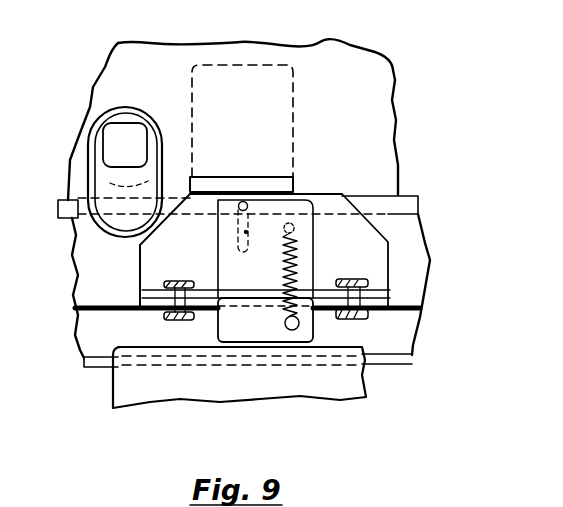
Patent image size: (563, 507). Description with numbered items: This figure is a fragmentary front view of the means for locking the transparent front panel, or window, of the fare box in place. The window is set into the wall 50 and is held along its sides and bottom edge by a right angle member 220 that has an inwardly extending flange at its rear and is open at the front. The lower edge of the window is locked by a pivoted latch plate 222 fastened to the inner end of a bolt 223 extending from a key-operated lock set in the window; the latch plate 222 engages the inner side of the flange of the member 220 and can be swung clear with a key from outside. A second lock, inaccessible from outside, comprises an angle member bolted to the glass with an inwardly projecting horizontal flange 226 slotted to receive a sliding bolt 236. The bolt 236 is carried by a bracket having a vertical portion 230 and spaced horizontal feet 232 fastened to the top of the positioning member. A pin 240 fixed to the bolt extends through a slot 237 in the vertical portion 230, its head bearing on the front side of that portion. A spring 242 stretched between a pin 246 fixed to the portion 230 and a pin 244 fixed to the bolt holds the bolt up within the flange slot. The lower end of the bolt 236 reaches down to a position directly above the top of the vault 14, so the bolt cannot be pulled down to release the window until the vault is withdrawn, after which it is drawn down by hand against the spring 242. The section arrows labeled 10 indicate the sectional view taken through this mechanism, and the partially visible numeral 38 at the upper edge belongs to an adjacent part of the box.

The section line 10 is at (239, 20).
The vault 14 is at (173, 387).
The frame member 38 is at (43, 5).
The wall 50 is at (315, 50).
The right angle member 220 is at (70, 198).
The latch plate 222 is at (93, 174).
The bolt 223 is at (127, 133).
The horizontal flange 226 is at (298, 178).
The vertical portion 230 is at (148, 263).
The horizontal feet 232 is at (146, 298).
The sliding bolt 236 is at (227, 233).
The slot 237 is at (295, 196).
The pin 240 is at (245, 201).
The spring 242 is at (300, 262).
The pin 244 is at (285, 323).
The pin 246 is at (290, 215).